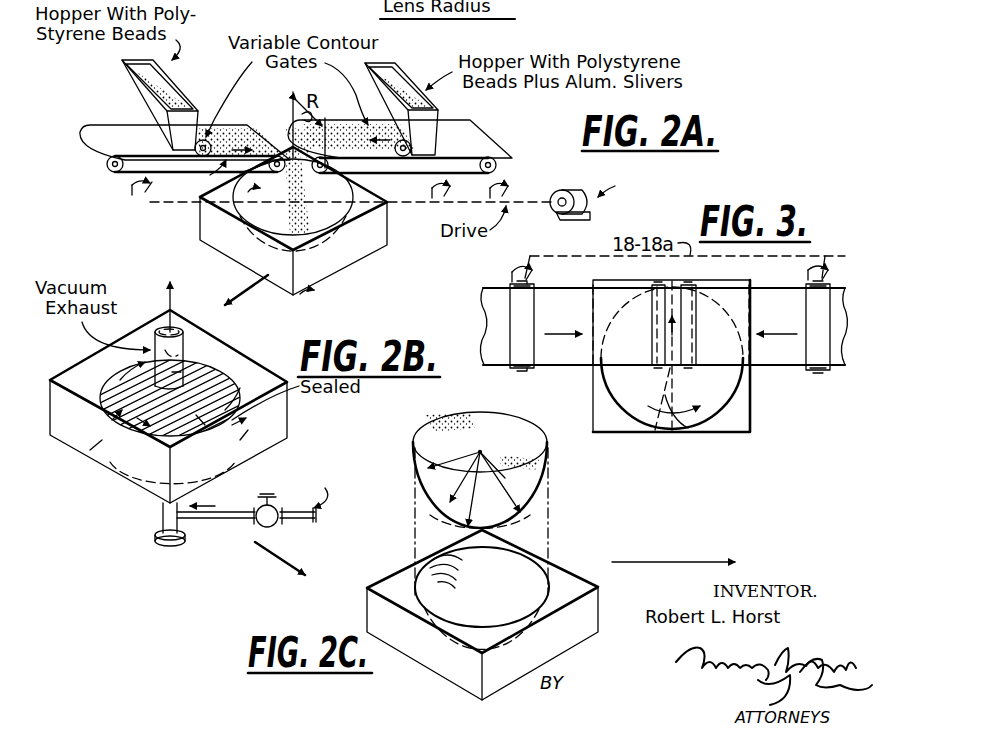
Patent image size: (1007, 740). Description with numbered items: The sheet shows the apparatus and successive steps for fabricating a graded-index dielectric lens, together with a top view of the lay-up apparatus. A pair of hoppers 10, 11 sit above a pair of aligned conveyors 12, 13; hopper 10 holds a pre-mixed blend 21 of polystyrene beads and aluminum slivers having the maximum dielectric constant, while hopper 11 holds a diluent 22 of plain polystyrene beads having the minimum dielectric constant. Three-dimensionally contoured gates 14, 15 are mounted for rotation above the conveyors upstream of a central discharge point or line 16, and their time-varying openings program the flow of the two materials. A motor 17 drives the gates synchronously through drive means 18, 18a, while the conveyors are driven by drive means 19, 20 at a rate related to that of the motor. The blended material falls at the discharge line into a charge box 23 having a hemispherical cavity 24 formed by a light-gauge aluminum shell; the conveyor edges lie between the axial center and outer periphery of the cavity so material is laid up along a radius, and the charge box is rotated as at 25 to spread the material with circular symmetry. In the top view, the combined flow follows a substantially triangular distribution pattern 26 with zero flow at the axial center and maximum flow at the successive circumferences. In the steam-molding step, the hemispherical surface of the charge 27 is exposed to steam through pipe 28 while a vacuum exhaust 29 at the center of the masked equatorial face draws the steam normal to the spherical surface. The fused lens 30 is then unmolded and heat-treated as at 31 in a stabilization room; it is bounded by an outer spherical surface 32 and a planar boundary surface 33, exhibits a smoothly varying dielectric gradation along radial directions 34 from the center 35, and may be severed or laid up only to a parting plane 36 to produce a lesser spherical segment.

In FIG. 2A, the hopper 10 is at (428, 124).
In FIG. 2A, the hopper 11 is at (133, 93).
In FIG. 3, the hopper 11 is at (577, 345).
In FIG. 2A, the conveyor 12 is at (460, 146).
In FIG. 3, the conveyor 12 is at (782, 350).
In FIG. 2A, the conveyor 13 is at (108, 145).
In FIG. 2A, the three-dimensionally contoured gate 14 is at (398, 160).
In FIG. 3, the three-dimensionally contoured gate 14 is at (814, 350).
In FIG. 2A, the three-dimensionally contoured gate 15 is at (196, 162).
In FIG. 3, the three-dimensionally contoured gate 15 is at (520, 346).
In FIG. 2A, the central discharge point or line 16 is at (276, 130).
In FIG. 2A, the motor 17 is at (588, 205).
In FIG. 2A, the drive means 18 is at (440, 195).
In FIG. 2A, the drive means 18a is at (250, 242).
In FIG. 2A, the drive means 19 is at (507, 184).
In FIG. 2A, the drive means 20 is at (138, 195).
In FIG. 2A, the pre-mixed blend 21 is at (396, 82).
In FIG. 2A, the diluent 22 is at (176, 104).
In FIG. 2A, the charge box 23 is at (362, 240).
In FIG. 3, the charge box 23 is at (730, 415).
In FIG. 2A, the hemispherical cavity 24 is at (336, 218).
In FIG. 3, the hemispherical cavity 24 is at (630, 405).
In FIG. 2A, the rotation 25 is at (300, 284).
In FIG. 3, the rotation 25 is at (682, 420).
In FIG. 3, the triangular distribution pattern 26 is at (666, 415).
In FIG. 2B, the charge 27 is at (120, 458).
In FIG. 2B, the steam pipe 28 is at (222, 520).
In FIG. 2B, the vacuum exhaust 29 is at (184, 356).
In FIG. 2C, the fused lens 30 is at (548, 449).
In FIG. 2C, the heat treatment 31 is at (662, 562).
In FIG. 2C, the outer spherical surface 32 is at (545, 484).
In FIG. 2C, the planar boundary surface 33 is at (462, 420).
In FIG. 2C, the radial directions 34 is at (466, 460).
In FIG. 2C, the center of the lens 35 is at (480, 452).
In FIG. 2C, the parting plane 36 is at (528, 514).